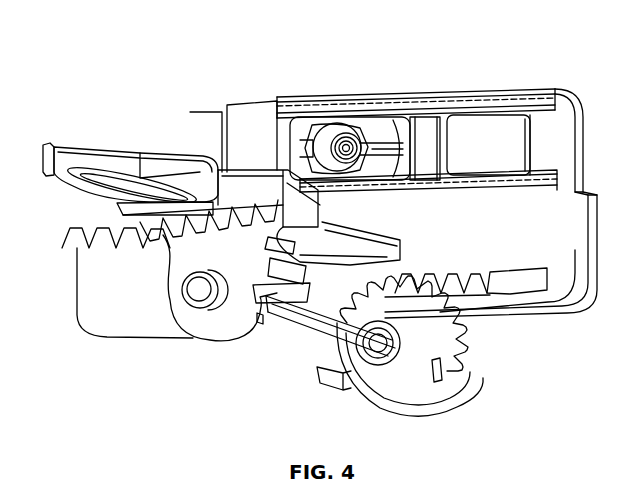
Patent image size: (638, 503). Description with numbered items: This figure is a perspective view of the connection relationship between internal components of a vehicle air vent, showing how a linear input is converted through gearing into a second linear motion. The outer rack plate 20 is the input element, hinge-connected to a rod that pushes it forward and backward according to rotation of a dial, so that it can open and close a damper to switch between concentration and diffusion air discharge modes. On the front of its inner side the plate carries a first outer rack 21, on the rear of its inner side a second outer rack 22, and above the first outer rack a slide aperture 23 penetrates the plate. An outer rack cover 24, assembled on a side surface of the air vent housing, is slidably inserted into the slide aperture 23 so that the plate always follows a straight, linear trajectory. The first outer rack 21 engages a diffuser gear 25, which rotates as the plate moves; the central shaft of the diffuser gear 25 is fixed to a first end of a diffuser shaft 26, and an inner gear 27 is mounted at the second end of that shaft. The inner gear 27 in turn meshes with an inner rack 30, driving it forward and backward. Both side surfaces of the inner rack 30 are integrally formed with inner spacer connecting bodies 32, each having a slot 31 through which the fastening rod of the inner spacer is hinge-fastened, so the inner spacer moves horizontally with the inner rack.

The outer rack plate 20 is at (553, 86).
The first outer rack 21 is at (478, 288).
The second outer rack 22 is at (112, 244).
The slide aperture 23 is at (463, 124).
The outer rack cover 24 is at (425, 135).
The diffuser gear 25 is at (472, 330).
The diffuser shaft 26 is at (313, 332).
The inner gear 27 is at (252, 342).
The inner rack 30 is at (245, 192).
The slot 31 is at (104, 177).
The inner spacer connecting body 32 is at (80, 157).